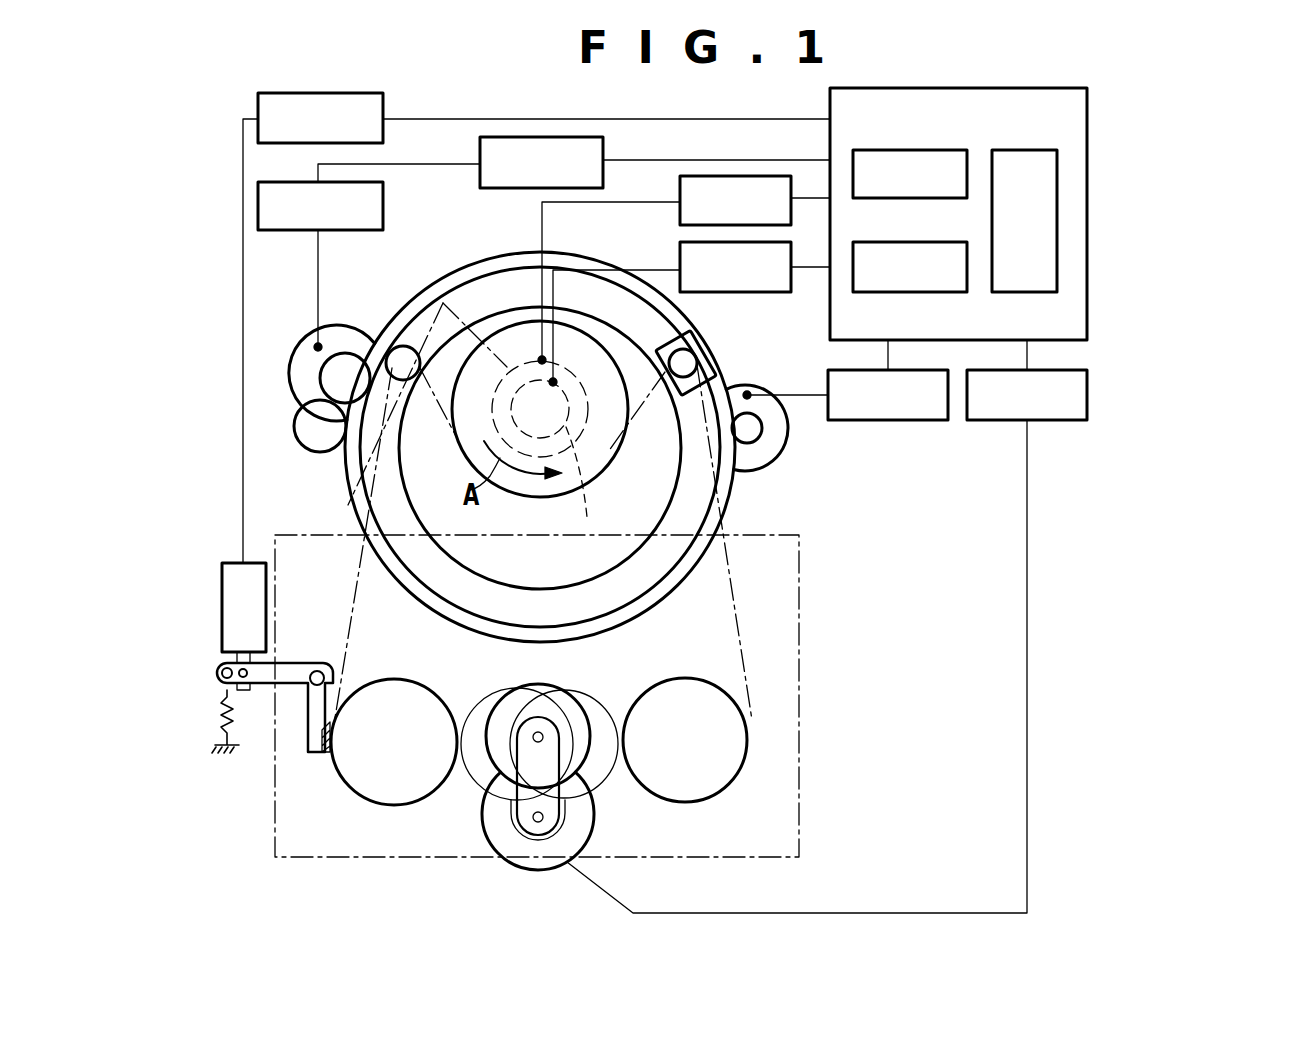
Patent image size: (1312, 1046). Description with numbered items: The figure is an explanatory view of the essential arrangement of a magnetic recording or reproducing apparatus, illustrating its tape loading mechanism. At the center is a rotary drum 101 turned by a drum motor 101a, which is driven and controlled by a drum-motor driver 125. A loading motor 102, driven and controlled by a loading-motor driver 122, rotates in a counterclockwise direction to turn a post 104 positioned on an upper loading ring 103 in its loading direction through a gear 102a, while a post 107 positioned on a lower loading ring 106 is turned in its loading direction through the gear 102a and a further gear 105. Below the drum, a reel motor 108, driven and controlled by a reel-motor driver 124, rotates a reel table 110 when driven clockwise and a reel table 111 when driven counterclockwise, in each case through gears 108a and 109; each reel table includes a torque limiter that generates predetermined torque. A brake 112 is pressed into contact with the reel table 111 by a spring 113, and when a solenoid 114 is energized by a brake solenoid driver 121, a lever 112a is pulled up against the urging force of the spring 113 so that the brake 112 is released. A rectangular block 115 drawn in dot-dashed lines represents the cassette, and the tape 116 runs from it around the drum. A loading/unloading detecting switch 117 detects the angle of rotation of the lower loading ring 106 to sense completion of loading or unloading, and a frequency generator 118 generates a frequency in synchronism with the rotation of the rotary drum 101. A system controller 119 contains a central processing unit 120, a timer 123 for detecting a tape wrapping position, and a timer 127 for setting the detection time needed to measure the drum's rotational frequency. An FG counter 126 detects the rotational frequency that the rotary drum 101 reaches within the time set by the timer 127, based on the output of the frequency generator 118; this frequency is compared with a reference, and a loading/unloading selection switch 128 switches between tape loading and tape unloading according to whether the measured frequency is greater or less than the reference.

The rotary drum 101 is at (605, 435).
The drum motor 101a is at (443, 303).
The loading motor 102 is at (303, 352).
The gear 102a is at (335, 380).
The upper loading ring 103 is at (502, 297).
The post 104 is at (400, 353).
The gear 105 is at (317, 432).
The lower loading ring 106 is at (353, 500).
The post 107 is at (685, 363).
The reel motor 108 is at (528, 858).
The gear 108a is at (557, 822).
The gear 109 is at (570, 712).
The reel table 110 is at (713, 767).
The reel table 111 is at (389, 790).
The brake 112 is at (313, 752).
The lever 112a is at (292, 672).
The spring 113 is at (228, 708).
The solenoid 114 is at (236, 577).
The cassette 115 is at (799, 738).
The tape 116 is at (728, 598).
The loading/unloading detecting switch 117 is at (915, 420).
The frequency generator (FG) 118 is at (591, 481).
The system controller 119 is at (1087, 320).
The central processing unit (CPU) 120 is at (1048, 150).
The brake solenoid driver 121 is at (383, 100).
The loading-motor driver 122 is at (383, 207).
The timer 123 is at (900, 292).
The reel-motor driver 124 is at (1055, 420).
The drum-motor driver 125 is at (680, 220).
The FG counter 126 is at (772, 292).
The timer 127 is at (873, 150).
The loading/unloading selection switch 128 is at (603, 150).